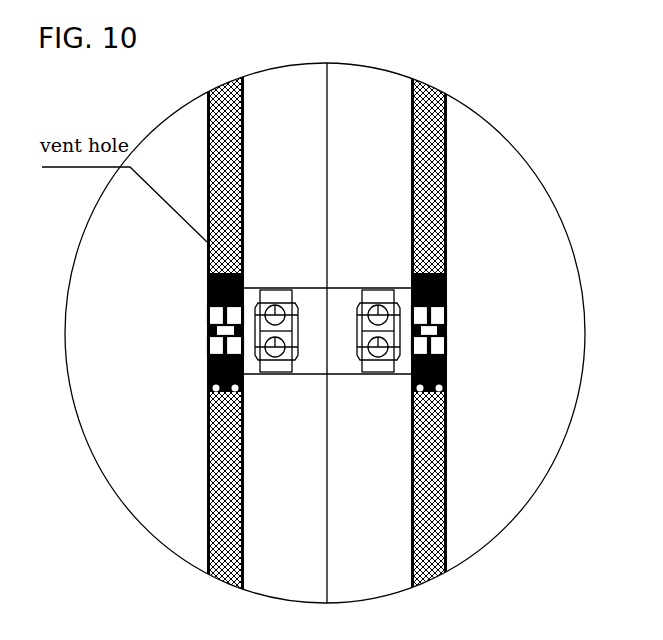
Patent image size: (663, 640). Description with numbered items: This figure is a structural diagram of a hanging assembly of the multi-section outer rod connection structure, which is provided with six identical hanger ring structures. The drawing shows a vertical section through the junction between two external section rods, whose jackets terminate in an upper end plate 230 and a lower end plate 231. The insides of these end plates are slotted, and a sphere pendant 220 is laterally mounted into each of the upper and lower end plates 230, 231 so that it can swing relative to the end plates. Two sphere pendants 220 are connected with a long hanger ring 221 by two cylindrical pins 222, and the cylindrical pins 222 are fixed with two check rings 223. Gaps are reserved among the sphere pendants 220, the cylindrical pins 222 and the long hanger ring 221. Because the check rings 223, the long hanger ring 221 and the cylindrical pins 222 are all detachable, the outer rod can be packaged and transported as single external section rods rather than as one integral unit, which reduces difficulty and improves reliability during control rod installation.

The sphere pendant 220 is at (388, 336).
The long hanger ring 221 is at (388, 266).
The cylindrical pin 222 is at (388, 314).
The check ring 223 is at (388, 379).
The upper end plate 230 is at (264, 341).
The lower end plate 231 is at (263, 252).